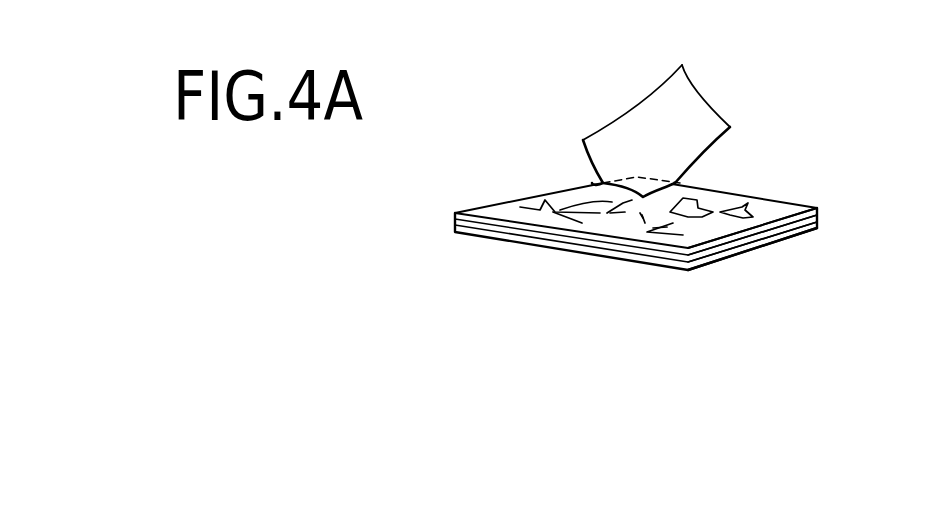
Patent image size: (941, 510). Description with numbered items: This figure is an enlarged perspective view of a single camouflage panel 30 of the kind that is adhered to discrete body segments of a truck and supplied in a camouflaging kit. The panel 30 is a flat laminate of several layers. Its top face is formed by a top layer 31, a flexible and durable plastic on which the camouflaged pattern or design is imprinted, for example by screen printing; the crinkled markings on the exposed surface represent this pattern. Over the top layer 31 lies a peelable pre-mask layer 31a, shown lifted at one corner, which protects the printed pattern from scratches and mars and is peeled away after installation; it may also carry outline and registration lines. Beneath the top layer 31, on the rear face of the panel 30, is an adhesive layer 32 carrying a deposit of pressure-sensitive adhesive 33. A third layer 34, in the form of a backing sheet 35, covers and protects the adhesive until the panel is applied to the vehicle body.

The camouflage panel 30 is at (544, 150).
The top layer 31 is at (716, 197).
The pre-mask layer 31a is at (685, 110).
The adhesive layer 32 is at (818, 215).
The pressure-sensitive adhesive 33 is at (780, 229).
The third layer 34 is at (732, 244).
The backing sheet 35 is at (793, 242).